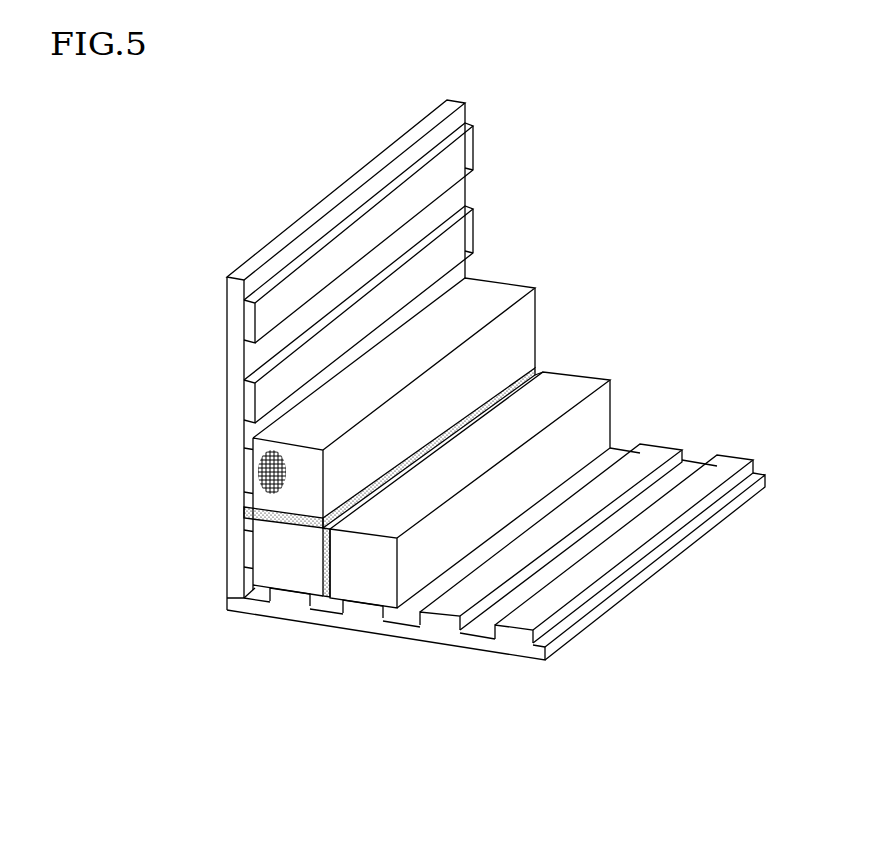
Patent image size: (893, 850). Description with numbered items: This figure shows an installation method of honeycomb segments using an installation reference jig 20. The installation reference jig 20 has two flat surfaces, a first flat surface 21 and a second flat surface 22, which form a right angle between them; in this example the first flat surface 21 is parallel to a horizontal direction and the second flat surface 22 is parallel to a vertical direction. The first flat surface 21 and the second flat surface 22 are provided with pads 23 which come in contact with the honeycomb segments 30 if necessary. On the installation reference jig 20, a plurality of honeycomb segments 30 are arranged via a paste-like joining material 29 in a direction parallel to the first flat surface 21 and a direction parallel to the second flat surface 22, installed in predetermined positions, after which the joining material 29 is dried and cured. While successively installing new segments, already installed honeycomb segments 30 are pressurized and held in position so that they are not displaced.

The installation reference jig 20 is at (427, 380).
The first flat surface 21 is at (572, 550).
The second flat surface 22 is at (413, 226).
The pads 23 is at (688, 488).
The joining material 29 is at (323, 565).
The honeycomb segments 30 is at (370, 585).